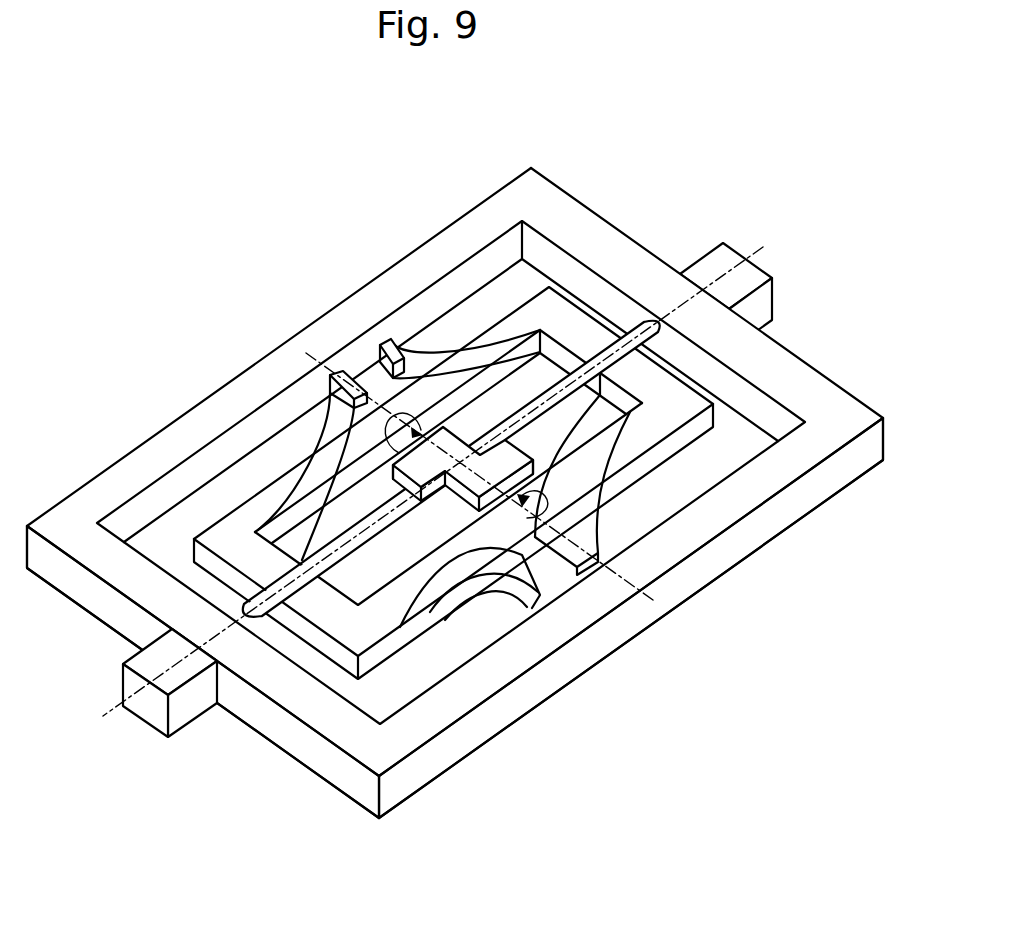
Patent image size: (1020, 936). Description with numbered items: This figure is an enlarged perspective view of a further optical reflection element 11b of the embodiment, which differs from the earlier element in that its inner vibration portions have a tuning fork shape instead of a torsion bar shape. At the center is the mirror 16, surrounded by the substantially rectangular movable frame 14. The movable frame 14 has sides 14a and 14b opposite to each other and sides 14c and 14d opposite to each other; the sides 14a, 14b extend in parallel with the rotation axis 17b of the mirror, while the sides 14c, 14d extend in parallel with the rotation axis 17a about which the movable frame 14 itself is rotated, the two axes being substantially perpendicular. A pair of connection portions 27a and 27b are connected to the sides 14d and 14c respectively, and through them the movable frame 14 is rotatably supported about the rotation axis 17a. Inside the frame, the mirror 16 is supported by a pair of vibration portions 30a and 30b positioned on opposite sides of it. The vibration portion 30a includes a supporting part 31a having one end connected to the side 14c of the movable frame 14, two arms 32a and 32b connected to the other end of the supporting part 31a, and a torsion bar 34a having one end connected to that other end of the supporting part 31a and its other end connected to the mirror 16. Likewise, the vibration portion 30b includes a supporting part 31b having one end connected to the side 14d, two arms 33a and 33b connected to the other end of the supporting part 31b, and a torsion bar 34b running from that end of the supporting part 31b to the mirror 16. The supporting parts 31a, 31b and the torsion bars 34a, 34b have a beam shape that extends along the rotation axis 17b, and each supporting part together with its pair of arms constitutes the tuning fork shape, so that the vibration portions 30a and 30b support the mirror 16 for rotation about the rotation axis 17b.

The optical reflection element 11b is at (657, 173).
The movable frame 14 is at (372, 740).
The side of movable frame 14a is at (768, 527).
The side of movable frame 14b is at (155, 457).
The side of movable frame 14c is at (115, 603).
The side of movable frame 14d is at (772, 362).
The mirror 16 is at (500, 464).
The rotation axis 17a is at (498, 436).
The rotation axis 17b is at (113, 703).
The connection portion 27a is at (705, 272).
The connection portion 27b is at (197, 707).
The vibration portion 30a is at (473, 529).
The vibration portion 30b is at (451, 433).
The supporting part 31a is at (372, 657).
The supporting part 31b is at (497, 339).
The arm 32a is at (372, 608).
The arm 32b is at (260, 512).
The arm 33a is at (335, 373).
The arm 33b is at (462, 355).
The torsion bar 34a is at (577, 582).
The torsion bar 34b is at (392, 338).